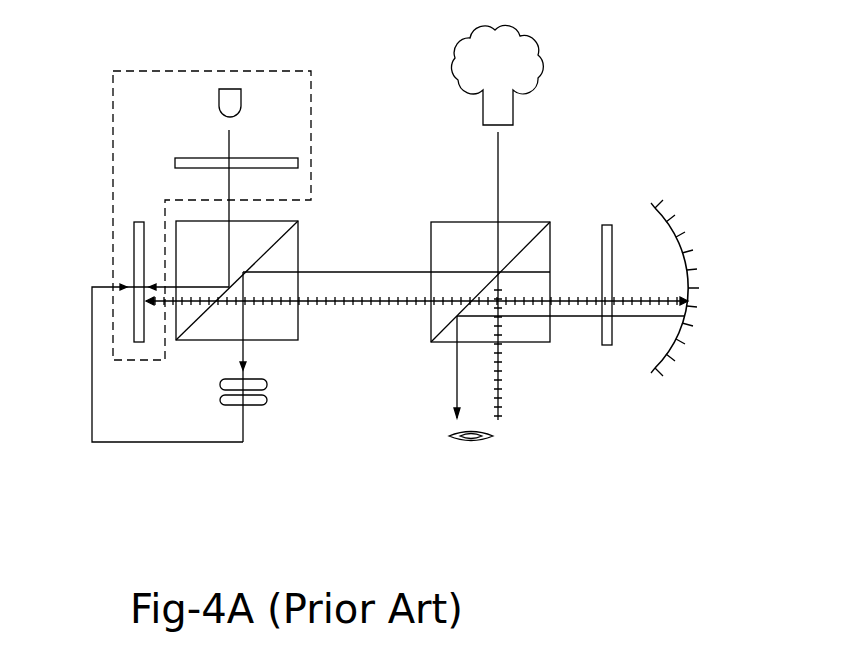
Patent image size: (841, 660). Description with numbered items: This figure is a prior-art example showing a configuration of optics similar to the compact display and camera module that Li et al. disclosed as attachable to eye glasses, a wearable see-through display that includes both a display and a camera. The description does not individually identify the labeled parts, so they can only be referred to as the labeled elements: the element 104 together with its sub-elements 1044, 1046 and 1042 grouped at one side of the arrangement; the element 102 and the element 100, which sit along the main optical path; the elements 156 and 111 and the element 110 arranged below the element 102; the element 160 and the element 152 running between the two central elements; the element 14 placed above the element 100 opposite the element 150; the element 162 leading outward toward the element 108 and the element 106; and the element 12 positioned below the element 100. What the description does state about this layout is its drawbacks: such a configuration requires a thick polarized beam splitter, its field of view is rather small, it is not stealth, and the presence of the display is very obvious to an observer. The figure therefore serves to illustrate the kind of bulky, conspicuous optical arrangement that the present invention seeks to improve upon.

The light source module 104 is at (176, 70).
The light emitting diode 1044 is at (229, 89).
The filter 1046 is at (263, 157).
The polarizer 1042 is at (133, 237).
The first beam splitter 102 is at (192, 341).
The return light path 156 is at (92, 365).
The light path to lens 111 is at (245, 353).
The lens assembly 110 is at (268, 405).
The measuring beam 160 is at (363, 305).
The transmitted beam 152 is at (370, 272).
The second beam splitter 100 is at (478, 221).
The object 14 is at (530, 70).
The vertical reference beam 150 is at (499, 365).
The output beam 162 is at (580, 318).
The eye lens 12 is at (465, 440).
The second polarizer 108 is at (607, 225).
The scale 106 is at (655, 204).